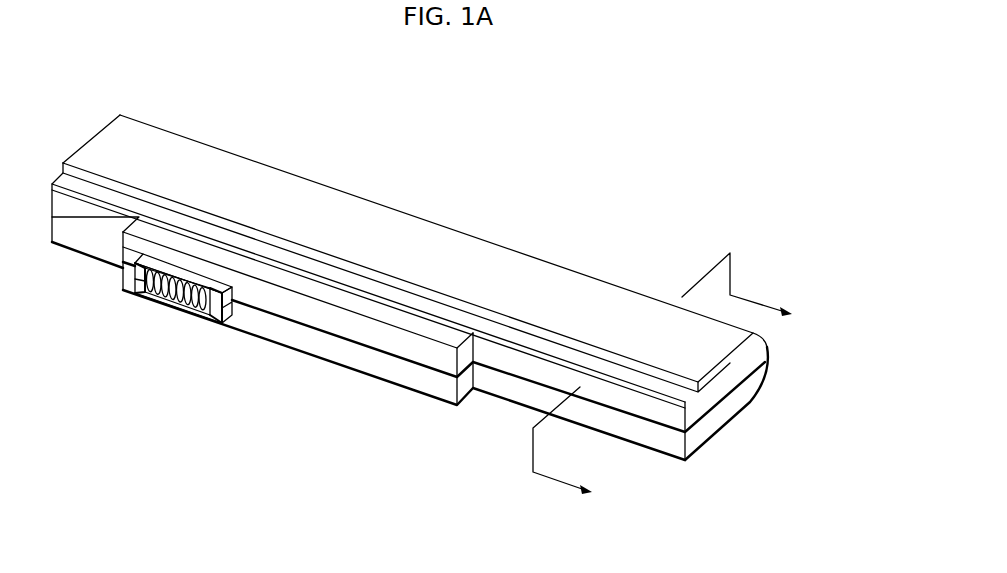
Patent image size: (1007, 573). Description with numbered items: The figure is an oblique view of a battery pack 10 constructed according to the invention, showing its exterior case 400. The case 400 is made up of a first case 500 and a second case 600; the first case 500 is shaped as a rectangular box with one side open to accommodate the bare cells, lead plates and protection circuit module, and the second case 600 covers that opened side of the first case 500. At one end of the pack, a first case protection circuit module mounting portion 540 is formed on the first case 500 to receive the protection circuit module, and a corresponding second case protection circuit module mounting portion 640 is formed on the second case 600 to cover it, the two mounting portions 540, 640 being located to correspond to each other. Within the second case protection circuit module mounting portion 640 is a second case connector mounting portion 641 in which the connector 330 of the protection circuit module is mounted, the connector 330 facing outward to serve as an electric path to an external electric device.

The battery pack 10 is at (43, 89).
The connector 330 is at (190, 313).
The case 400 is at (855, 427).
The first case 500 is at (748, 400).
The first case protection circuit module mounting portion 540 is at (372, 362).
The second case 600 is at (755, 360).
The second case protection circuit module mounting portion 640 is at (152, 317).
The second case connector mounting portion 641 is at (128, 293).